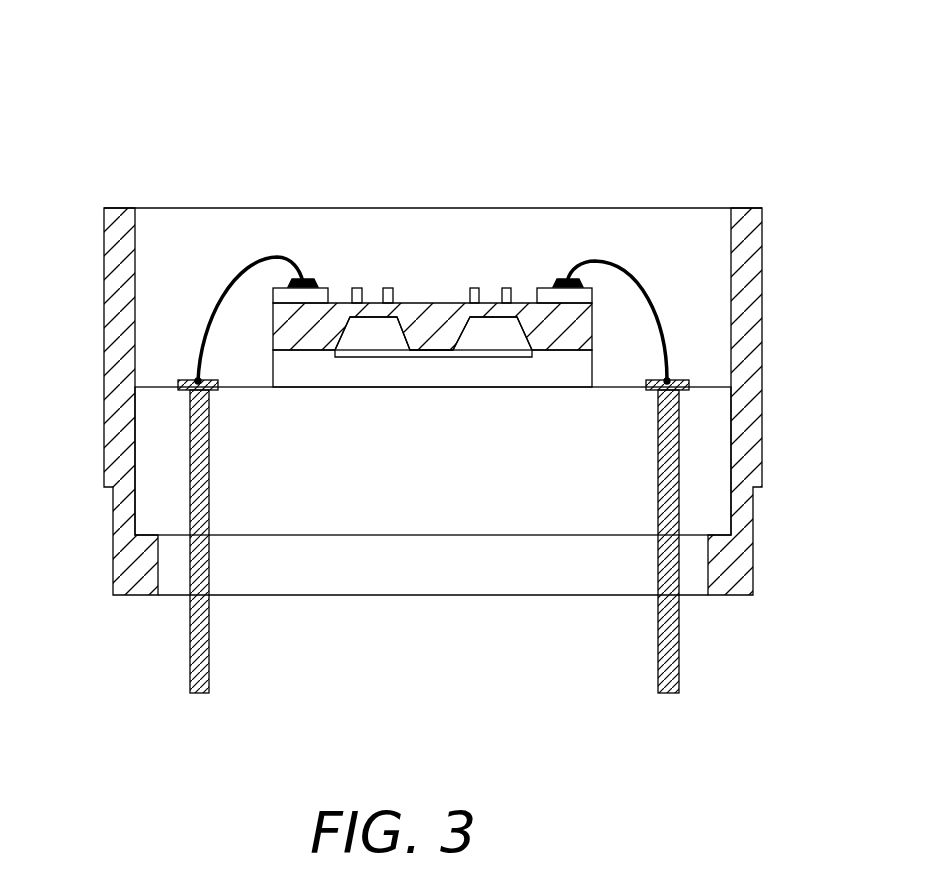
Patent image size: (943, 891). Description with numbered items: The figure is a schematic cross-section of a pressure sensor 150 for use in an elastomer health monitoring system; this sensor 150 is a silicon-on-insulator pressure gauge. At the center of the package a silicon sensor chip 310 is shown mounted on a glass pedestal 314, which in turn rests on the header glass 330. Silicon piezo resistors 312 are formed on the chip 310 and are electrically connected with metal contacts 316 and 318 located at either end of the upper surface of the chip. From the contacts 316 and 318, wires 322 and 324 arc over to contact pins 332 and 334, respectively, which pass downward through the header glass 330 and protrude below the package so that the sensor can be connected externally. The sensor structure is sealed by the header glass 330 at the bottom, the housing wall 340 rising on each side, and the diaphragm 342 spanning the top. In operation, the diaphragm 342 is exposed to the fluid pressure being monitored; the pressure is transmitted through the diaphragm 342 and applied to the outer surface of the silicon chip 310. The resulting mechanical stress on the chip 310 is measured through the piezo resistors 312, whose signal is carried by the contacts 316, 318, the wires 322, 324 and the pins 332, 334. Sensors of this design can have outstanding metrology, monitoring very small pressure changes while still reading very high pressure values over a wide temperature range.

The sensor 150 is at (285, 70).
The silicon sensor chip 310 is at (441, 310).
The silicon piezo resistor 312 is at (355, 288).
The glass pedestal 314 is at (450, 381).
The metal contact 316 is at (315, 282).
The metal contact 318 is at (560, 280).
The wire 322 is at (238, 270).
The wire 324 is at (644, 283).
The header glass 330 is at (448, 476).
The contact pin 332 is at (190, 663).
The contact pin 334 is at (658, 663).
The housing wall 340 is at (115, 257).
The diaphragm 342 is at (340, 208).